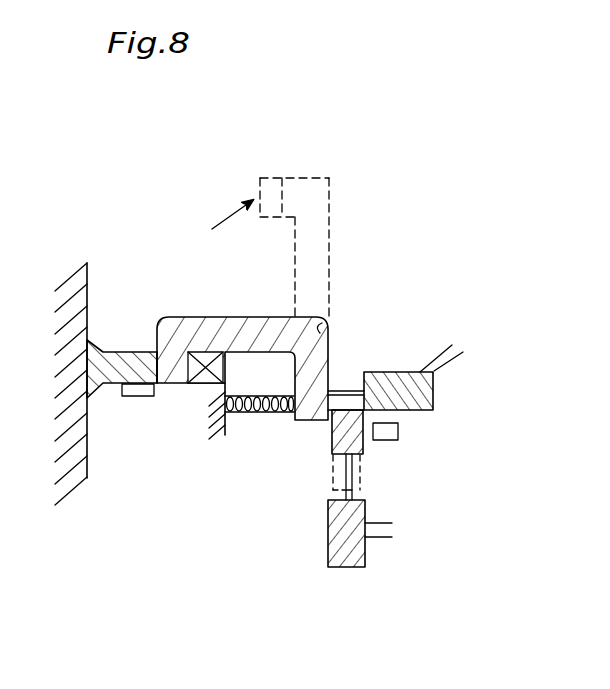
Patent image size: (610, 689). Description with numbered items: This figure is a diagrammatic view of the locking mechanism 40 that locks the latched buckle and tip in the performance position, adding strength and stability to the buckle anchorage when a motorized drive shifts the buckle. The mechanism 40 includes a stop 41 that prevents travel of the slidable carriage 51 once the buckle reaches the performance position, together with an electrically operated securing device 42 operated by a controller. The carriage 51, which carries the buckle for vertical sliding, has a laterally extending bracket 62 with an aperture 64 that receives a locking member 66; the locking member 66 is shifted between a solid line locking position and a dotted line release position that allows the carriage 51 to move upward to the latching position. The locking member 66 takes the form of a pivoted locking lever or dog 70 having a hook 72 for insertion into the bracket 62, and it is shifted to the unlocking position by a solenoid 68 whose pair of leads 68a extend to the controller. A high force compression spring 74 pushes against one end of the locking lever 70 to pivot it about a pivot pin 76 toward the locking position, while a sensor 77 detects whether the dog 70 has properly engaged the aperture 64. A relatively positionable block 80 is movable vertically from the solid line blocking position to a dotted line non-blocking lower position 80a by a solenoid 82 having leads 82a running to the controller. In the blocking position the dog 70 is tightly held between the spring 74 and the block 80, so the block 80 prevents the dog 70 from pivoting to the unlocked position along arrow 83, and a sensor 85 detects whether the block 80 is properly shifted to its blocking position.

The locking mechanism 40 is at (444, 197).
The stop 41 is at (209, 301).
The electrically operated securing device 42 is at (512, 430).
The carriage 51 is at (96, 268).
The bracket 62 is at (108, 375).
The aperture 64 is at (157, 352).
The locking member 66 is at (343, 207).
The solenoid 68 is at (413, 409).
The leads 68a is at (448, 352).
The locking lever 70 is at (318, 263).
The hook 72 is at (283, 177).
The compression spring 74 is at (273, 416).
The pivot pin 76 is at (322, 330).
The sensor 77 is at (139, 396).
The block 80 is at (340, 428).
The non-blocking lower position 80a is at (327, 490).
The solenoid 82 is at (345, 568).
The leads 82a is at (380, 538).
The arrow 83 is at (163, 313).
The sensor 85 is at (398, 440).